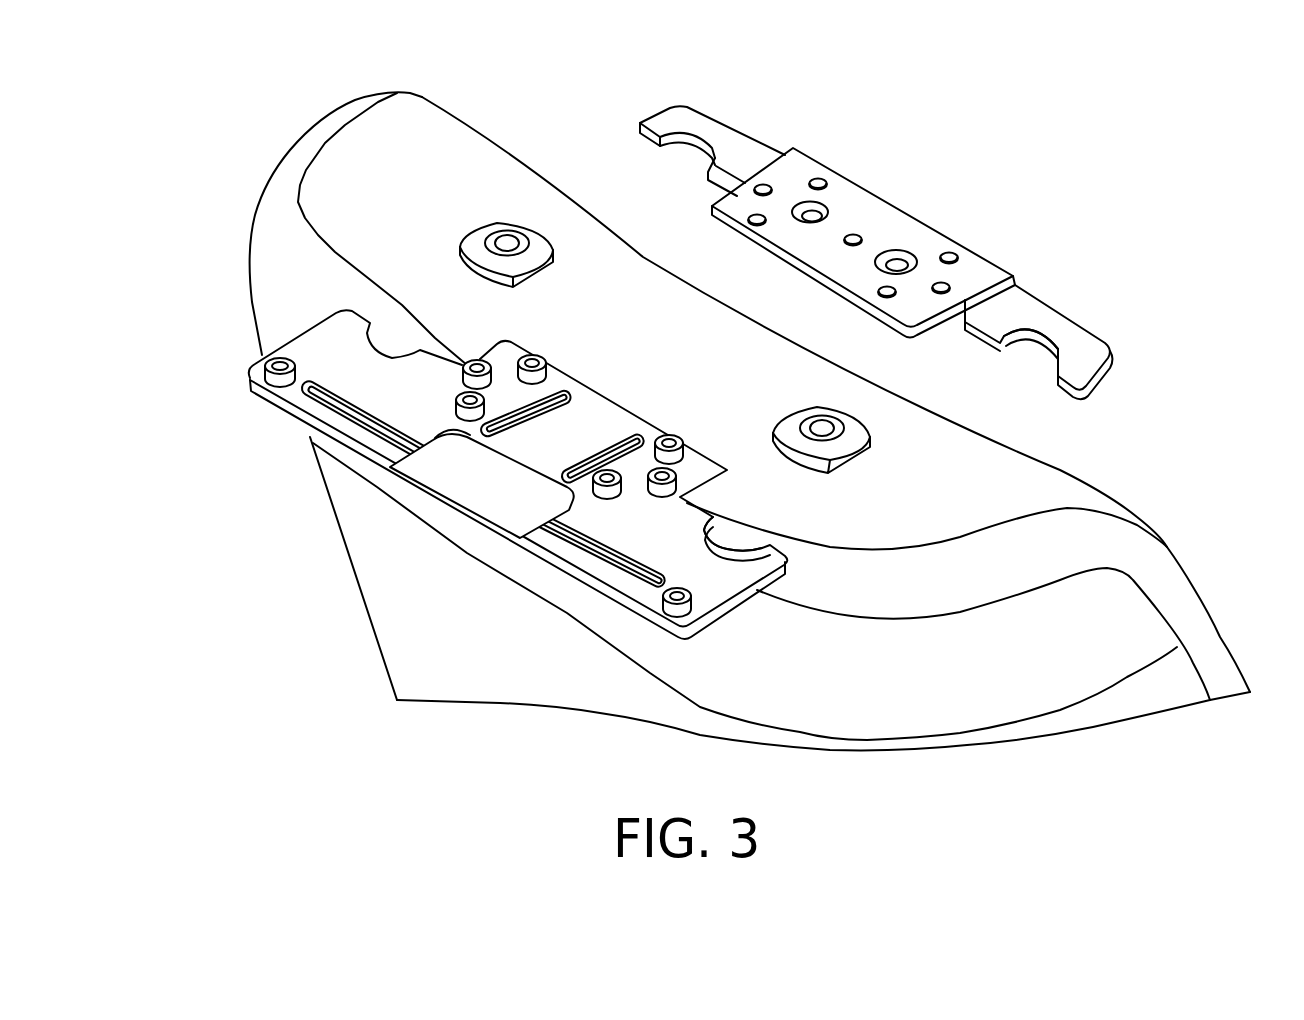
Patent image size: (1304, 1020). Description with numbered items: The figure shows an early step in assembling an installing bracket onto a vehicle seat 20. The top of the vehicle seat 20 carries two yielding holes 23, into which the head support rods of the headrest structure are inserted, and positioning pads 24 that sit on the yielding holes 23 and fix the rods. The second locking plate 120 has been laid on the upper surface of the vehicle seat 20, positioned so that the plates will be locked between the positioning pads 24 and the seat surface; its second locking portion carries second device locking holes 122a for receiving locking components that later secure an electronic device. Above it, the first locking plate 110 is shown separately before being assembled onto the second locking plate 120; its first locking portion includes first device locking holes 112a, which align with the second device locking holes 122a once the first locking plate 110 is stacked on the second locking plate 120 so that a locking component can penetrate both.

The vehicle seat 20 is at (1177, 583).
The yielding holes 23 is at (507, 243).
The positioning pads 24 is at (472, 243).
The first locking plate 110 is at (897, 227).
The first device locking hole 112a is at (1038, 352).
The second locking plate 120 is at (313, 400).
The second device locking hole 122a is at (728, 546).